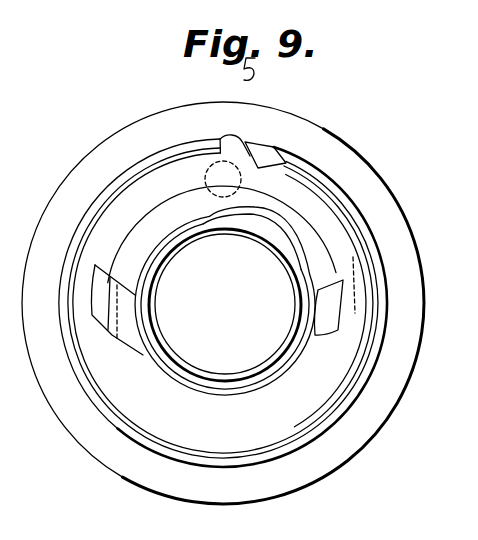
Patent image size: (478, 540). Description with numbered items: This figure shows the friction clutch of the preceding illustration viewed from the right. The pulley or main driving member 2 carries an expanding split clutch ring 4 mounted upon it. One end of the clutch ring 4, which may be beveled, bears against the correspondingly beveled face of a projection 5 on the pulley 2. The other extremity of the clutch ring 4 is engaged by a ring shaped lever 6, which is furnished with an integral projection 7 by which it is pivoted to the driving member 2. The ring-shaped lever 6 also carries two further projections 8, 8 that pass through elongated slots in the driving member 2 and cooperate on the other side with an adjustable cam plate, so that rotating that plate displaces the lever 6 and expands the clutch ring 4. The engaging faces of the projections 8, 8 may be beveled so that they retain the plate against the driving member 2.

The pulley or main driving member 2 is at (379, 204).
The expanding split clutch ring 4 is at (378, 353).
The projection 5 is at (258, 147).
The ring shaped lever 6 is at (275, 188).
The integral projection 7 is at (213, 176).
The projections 8 is at (122, 333).